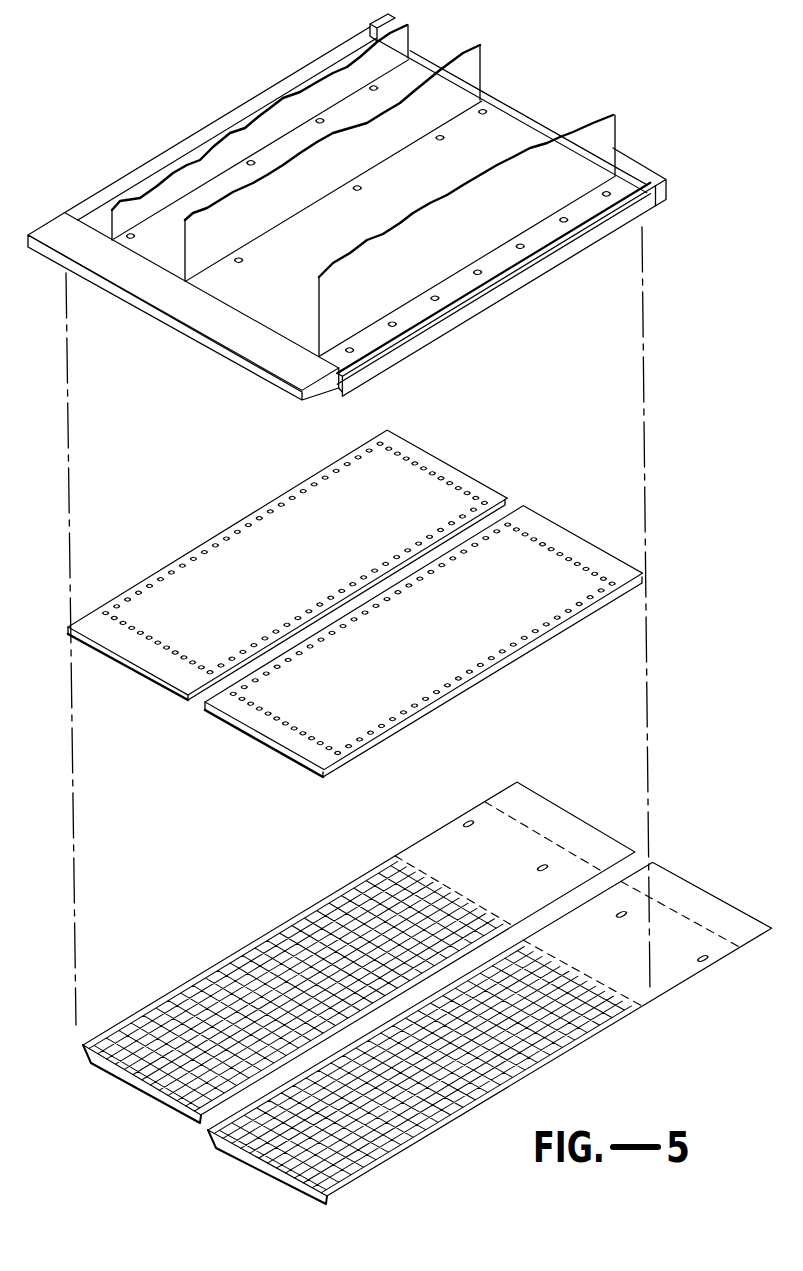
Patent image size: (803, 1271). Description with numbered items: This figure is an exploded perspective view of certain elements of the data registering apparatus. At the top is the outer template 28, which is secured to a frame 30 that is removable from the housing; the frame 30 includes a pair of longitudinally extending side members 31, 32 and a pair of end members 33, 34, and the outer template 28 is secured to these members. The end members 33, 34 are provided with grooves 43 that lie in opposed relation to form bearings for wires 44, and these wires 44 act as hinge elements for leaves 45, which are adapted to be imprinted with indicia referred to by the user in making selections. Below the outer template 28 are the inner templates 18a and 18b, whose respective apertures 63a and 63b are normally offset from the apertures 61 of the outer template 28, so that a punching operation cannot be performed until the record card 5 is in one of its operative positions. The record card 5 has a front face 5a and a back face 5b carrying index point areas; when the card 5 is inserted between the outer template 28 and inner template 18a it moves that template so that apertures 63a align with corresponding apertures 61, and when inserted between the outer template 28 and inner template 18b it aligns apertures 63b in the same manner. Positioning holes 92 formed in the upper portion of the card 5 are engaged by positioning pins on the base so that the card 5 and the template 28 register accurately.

The data record card 5 is at (592, 837).
The front face of card 5a is at (435, 852).
The back face of card 5b is at (651, 995).
The inner template 18a is at (452, 475).
The inner template 18b is at (568, 553).
The outer template 28 is at (558, 122).
The frame 30 is at (620, 207).
The side member 31 is at (477, 307).
The side member 32 is at (173, 153).
The end member 33 is at (557, 120).
The end member 34 is at (230, 333).
The grooves 43 is at (490, 143).
The wires 44 is at (413, 55).
The leaves 45 is at (598, 158).
The apertures 61 is at (373, 211).
The apertures 63a is at (402, 455).
The apertures 63b is at (527, 540).
The positioning holes 92 is at (467, 817).